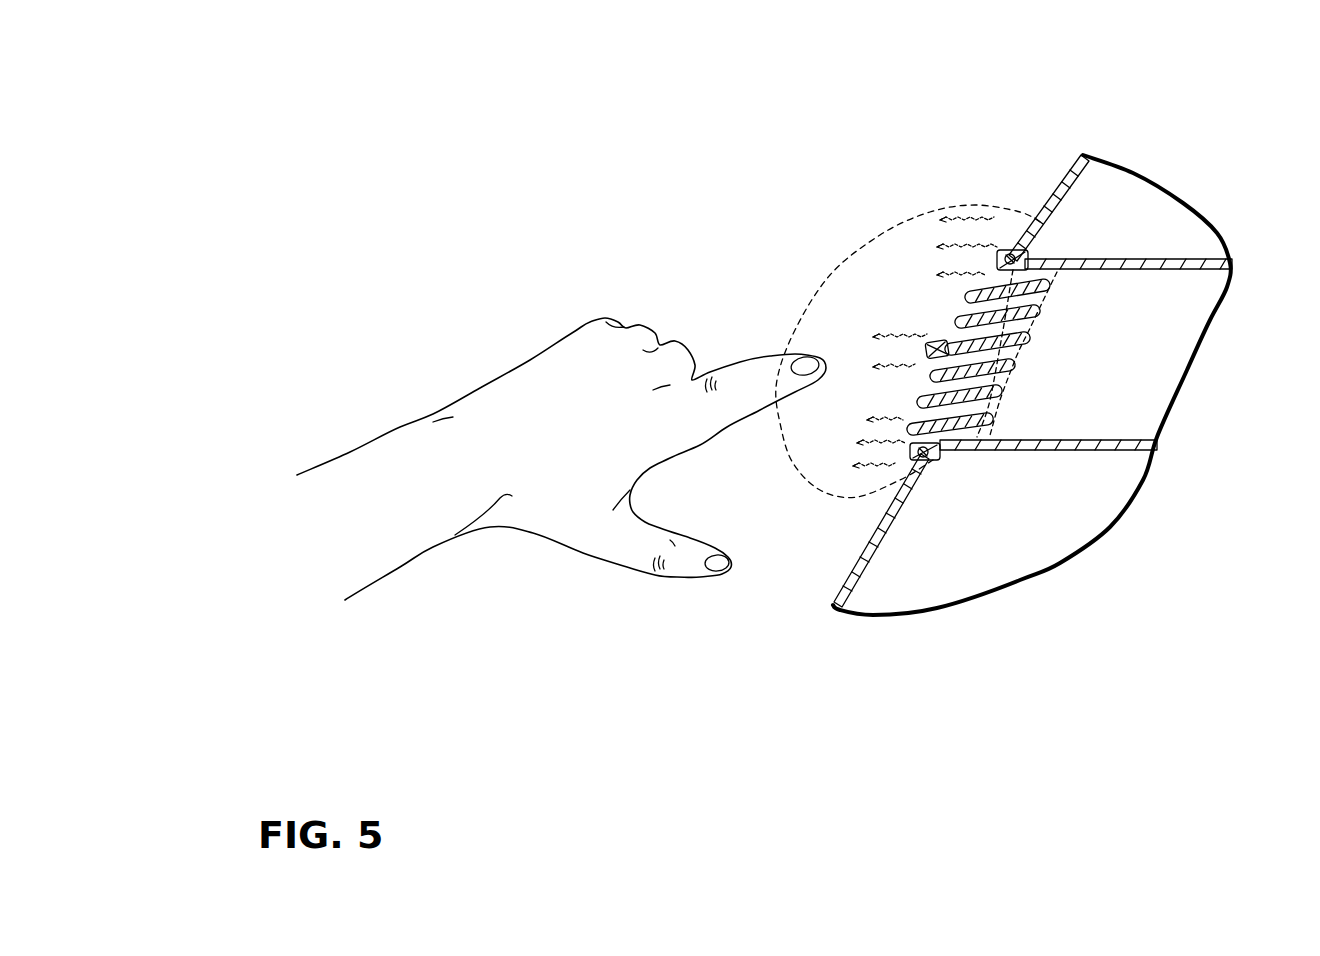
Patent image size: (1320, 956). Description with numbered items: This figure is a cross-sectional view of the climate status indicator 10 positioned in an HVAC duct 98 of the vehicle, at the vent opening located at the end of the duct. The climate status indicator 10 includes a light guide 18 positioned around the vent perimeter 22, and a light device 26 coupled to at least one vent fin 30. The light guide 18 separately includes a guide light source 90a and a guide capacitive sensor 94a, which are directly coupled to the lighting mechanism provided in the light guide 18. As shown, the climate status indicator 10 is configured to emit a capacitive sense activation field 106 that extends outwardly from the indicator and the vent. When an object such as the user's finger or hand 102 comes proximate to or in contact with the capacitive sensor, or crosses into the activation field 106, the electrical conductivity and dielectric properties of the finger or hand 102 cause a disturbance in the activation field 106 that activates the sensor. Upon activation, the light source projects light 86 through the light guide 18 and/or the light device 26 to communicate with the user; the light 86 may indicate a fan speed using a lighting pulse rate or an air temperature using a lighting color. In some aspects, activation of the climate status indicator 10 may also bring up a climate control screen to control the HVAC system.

The climate status indicator 10 is at (978, 363).
The light guide 18 is at (1010, 252).
The vent perimeter 22 is at (912, 455).
The light device 26 is at (927, 355).
The vent fin 30 is at (953, 320).
The light 86 is at (957, 245).
The guide light source 90a is at (1015, 250).
The guide capacitive sensor 94a is at (923, 462).
The HVAC duct 98 is at (1153, 355).
The user's finger or hand 102 is at (533, 395).
The capacitive sense activation field 106 is at (848, 262).